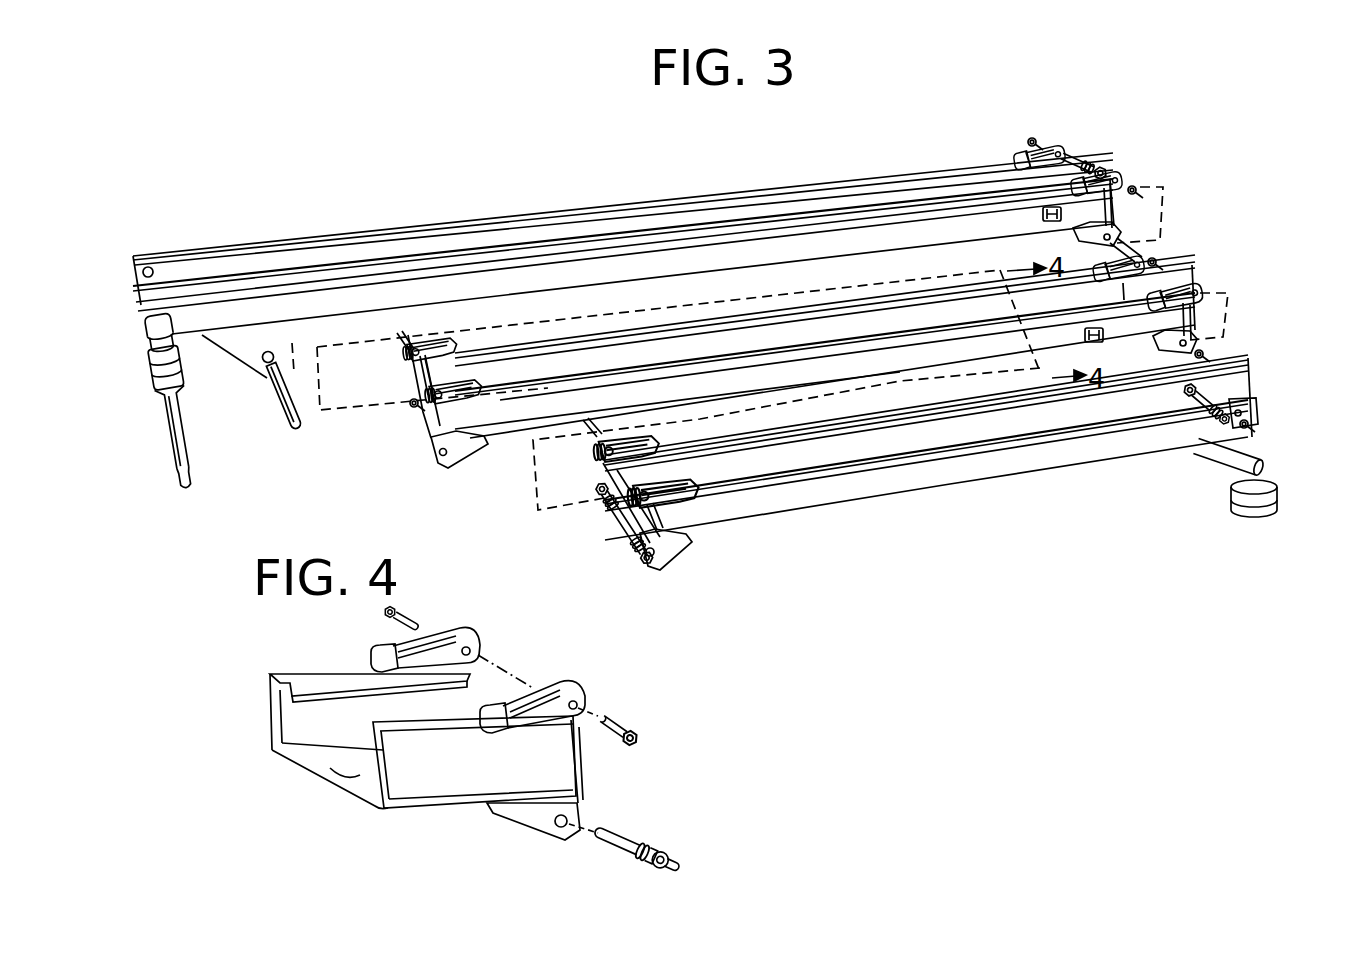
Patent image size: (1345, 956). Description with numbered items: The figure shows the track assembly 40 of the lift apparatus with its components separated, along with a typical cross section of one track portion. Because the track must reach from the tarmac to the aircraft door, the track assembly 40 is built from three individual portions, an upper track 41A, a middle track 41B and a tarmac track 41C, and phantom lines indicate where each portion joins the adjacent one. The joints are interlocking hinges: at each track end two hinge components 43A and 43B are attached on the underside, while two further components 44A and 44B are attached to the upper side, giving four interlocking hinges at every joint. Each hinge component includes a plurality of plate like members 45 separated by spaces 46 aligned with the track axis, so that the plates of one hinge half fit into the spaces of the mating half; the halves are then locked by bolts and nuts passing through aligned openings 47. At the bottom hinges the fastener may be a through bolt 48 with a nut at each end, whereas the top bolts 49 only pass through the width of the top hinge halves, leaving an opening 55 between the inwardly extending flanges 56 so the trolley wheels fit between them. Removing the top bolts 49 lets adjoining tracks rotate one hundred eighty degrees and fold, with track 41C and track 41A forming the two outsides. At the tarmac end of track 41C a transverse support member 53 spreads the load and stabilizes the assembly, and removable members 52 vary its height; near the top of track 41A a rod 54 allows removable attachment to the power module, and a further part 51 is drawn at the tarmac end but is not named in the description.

In FIG. 3, the track assembly 40 is at (1070, 525).
In FIG. 3, the upper track portion 41A is at (548, 232).
In FIG. 3, the middle track portion 41B is at (695, 347).
In FIG. 3, the tarmac track portion 41C is at (893, 500).
In FIG. 3, the lower hinge component 43A is at (452, 455).
In FIG. 3, the upper hinge component 43B is at (1153, 252).
In FIG. 3, the bottom hinge half 44A is at (428, 398).
In FIG. 3, the side hinge half 44B is at (407, 360).
In FIG. 4, the side hinge half 44B is at (467, 630).
In FIG. 4, the plate like members 45 is at (530, 723).
In FIG. 4, the spaces 46 is at (460, 627).
In FIG. 4, the aligned openings 47 is at (580, 697).
In FIG. 3, the through bolt 48 is at (615, 510).
In FIG. 4, the through bolt 48 is at (617, 837).
In FIG. 3, the top bolt 49 is at (1070, 165).
In FIG. 4, the top bolt 49 is at (400, 612).
In FIG. 3, the support rod 51 is at (1250, 450).
In FIG. 3, the removable members 52 is at (1243, 507).
In FIG. 3, the support member 53 is at (282, 397).
In FIG. 3, the rod 54 is at (162, 435).
In FIG. 4, the opening 55 is at (347, 700).
In FIG. 4, the inwardly extending flanges 56 is at (350, 768).